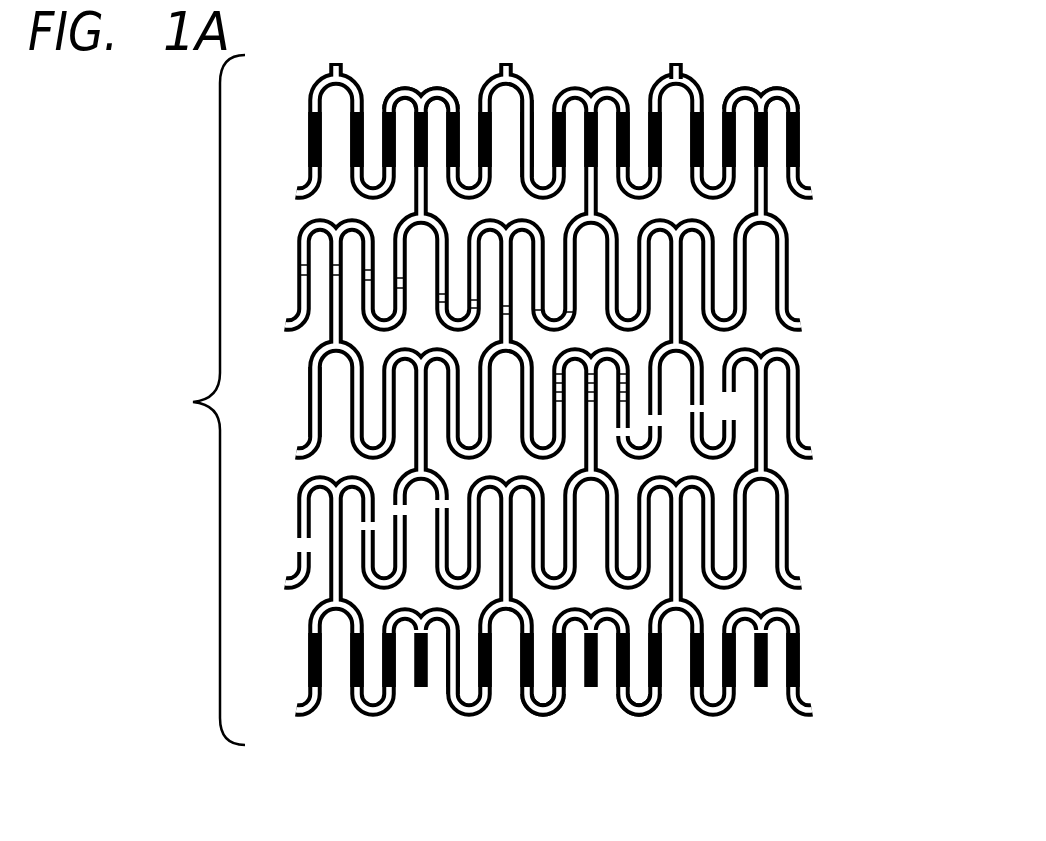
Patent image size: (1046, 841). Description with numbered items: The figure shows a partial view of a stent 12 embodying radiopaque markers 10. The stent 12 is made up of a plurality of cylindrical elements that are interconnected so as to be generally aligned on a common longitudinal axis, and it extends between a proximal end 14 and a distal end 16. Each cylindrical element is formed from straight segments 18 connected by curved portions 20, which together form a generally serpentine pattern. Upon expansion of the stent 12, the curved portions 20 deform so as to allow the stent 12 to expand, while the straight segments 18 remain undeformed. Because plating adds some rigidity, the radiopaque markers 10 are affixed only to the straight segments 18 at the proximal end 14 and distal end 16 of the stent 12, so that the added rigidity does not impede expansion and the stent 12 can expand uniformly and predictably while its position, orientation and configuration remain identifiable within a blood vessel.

The radiopaque marker 10 is at (308, 125).
The stent 12 is at (800, 262).
The proximal end 14 is at (678, 63).
The distal end 16 is at (640, 720).
The straight segment 18 is at (537, 123).
The curved portion 20 is at (428, 88).